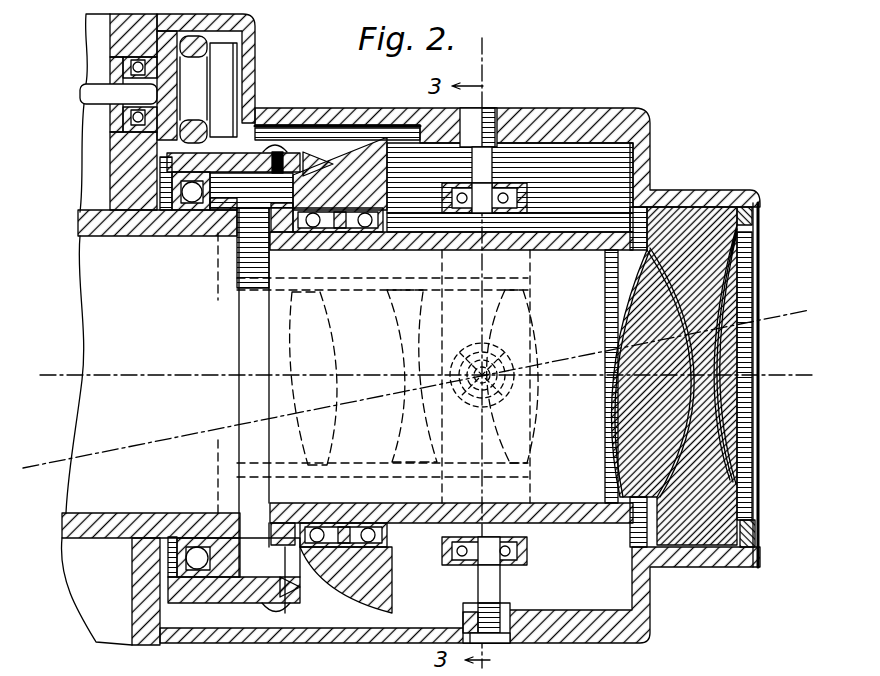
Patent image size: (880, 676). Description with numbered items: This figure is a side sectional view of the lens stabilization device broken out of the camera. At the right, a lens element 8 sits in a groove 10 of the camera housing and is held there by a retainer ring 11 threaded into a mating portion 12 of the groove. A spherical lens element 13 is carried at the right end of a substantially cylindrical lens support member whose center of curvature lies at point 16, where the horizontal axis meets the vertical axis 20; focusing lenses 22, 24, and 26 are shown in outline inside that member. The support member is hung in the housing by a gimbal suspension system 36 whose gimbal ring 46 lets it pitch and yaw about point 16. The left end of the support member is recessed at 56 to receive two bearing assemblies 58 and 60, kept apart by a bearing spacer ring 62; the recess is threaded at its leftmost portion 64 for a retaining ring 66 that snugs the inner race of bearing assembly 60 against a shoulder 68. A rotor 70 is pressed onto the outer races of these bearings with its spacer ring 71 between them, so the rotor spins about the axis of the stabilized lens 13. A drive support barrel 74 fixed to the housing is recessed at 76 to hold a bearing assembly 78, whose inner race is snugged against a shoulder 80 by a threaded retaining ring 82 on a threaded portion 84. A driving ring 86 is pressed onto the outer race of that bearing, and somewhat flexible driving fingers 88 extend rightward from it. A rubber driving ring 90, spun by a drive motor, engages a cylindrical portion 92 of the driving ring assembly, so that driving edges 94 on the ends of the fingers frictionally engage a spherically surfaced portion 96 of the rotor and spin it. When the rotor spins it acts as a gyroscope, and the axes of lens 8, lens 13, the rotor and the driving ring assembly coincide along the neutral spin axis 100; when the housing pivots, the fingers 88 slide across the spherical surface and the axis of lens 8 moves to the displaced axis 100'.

The lens element 8 is at (707, 413).
The groove 10 is at (684, 210).
The retainer ring 11 is at (758, 212).
The mating portion 12 is at (740, 207).
The spherical lens element 13 is at (647, 422).
The point 16 is at (485, 372).
The vertical axis 20 is at (483, 68).
The focusing lens 22 is at (512, 376).
The focusing lens 24 is at (412, 376).
The focusing lens 26 is at (313, 378).
The gimbal suspension system 36 is at (517, 172).
The gimbal ring 46 is at (533, 208).
The recess 56 is at (372, 250).
The bearing assembly 58 is at (330, 255).
The bearing assembly 60 is at (390, 250).
The bearing spacer ring 62 is at (335, 250).
The threaded portion 64 is at (297, 255).
The retaining ring 66 is at (276, 258).
The shoulder 68 is at (404, 251).
The rotor 70 is at (360, 160).
The spacer ring 71 is at (356, 250).
The drive support barrel 74 is at (85, 224).
The recess 76 is at (193, 222).
The bearing assembly 78 is at (150, 155).
The shoulder 80 is at (168, 234).
The threaded retaining ring 82 is at (213, 228).
The threaded portion 84 is at (226, 232).
The driving ring 86 is at (237, 594).
The driving fingers 88 is at (309, 148).
The rubber driving ring 90 is at (205, 70).
The cylindrical portion 92 is at (246, 150).
The driving edges 94 is at (340, 168).
The spherically surfaced portion 96 is at (374, 158).
The spin axis 100 is at (433, 361).
The displaced axis 100' is at (426, 374).